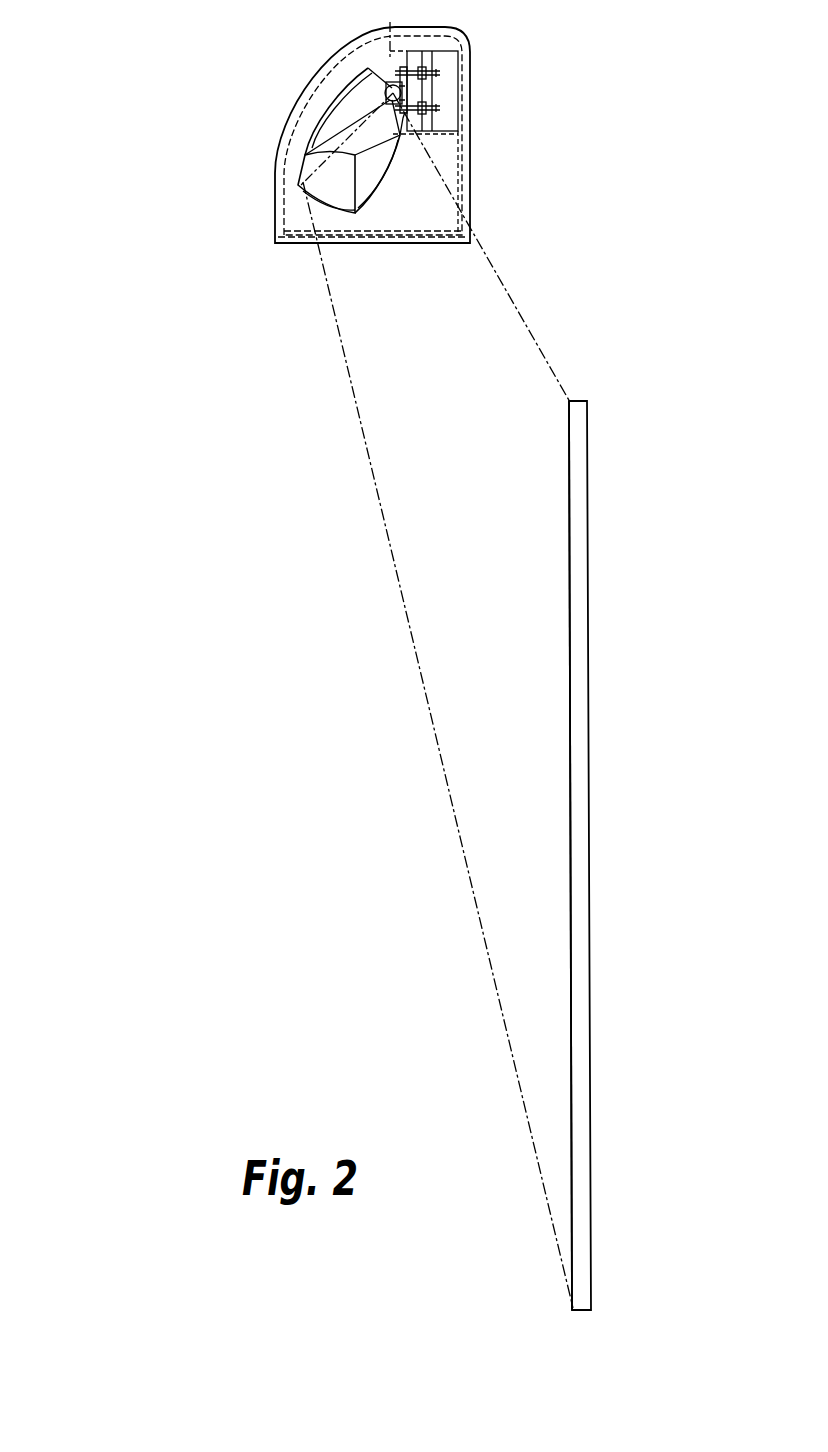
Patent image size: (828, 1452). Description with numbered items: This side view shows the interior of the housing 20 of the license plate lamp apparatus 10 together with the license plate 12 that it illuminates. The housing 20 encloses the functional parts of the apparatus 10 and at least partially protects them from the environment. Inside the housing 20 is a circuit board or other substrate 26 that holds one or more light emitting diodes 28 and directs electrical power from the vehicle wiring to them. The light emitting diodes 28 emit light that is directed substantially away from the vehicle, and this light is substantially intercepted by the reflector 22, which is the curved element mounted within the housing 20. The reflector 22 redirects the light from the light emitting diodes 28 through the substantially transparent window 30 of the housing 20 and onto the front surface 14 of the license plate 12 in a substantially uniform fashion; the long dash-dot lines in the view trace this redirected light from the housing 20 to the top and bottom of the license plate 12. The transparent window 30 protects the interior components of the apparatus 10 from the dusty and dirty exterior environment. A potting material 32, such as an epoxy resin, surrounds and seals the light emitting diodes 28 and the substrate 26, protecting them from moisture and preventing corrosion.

The apparatus 10 is at (176, 99).
The license plate 12 is at (578, 762).
The front surface 14 is at (570, 680).
The housing 20 is at (275, 207).
The reflector 22 is at (313, 137).
The substrate 26 is at (435, 118).
The light emitting diodes 28 is at (408, 72).
The substantially transparent window 30 is at (383, 243).
The potting material 32 is at (447, 75).